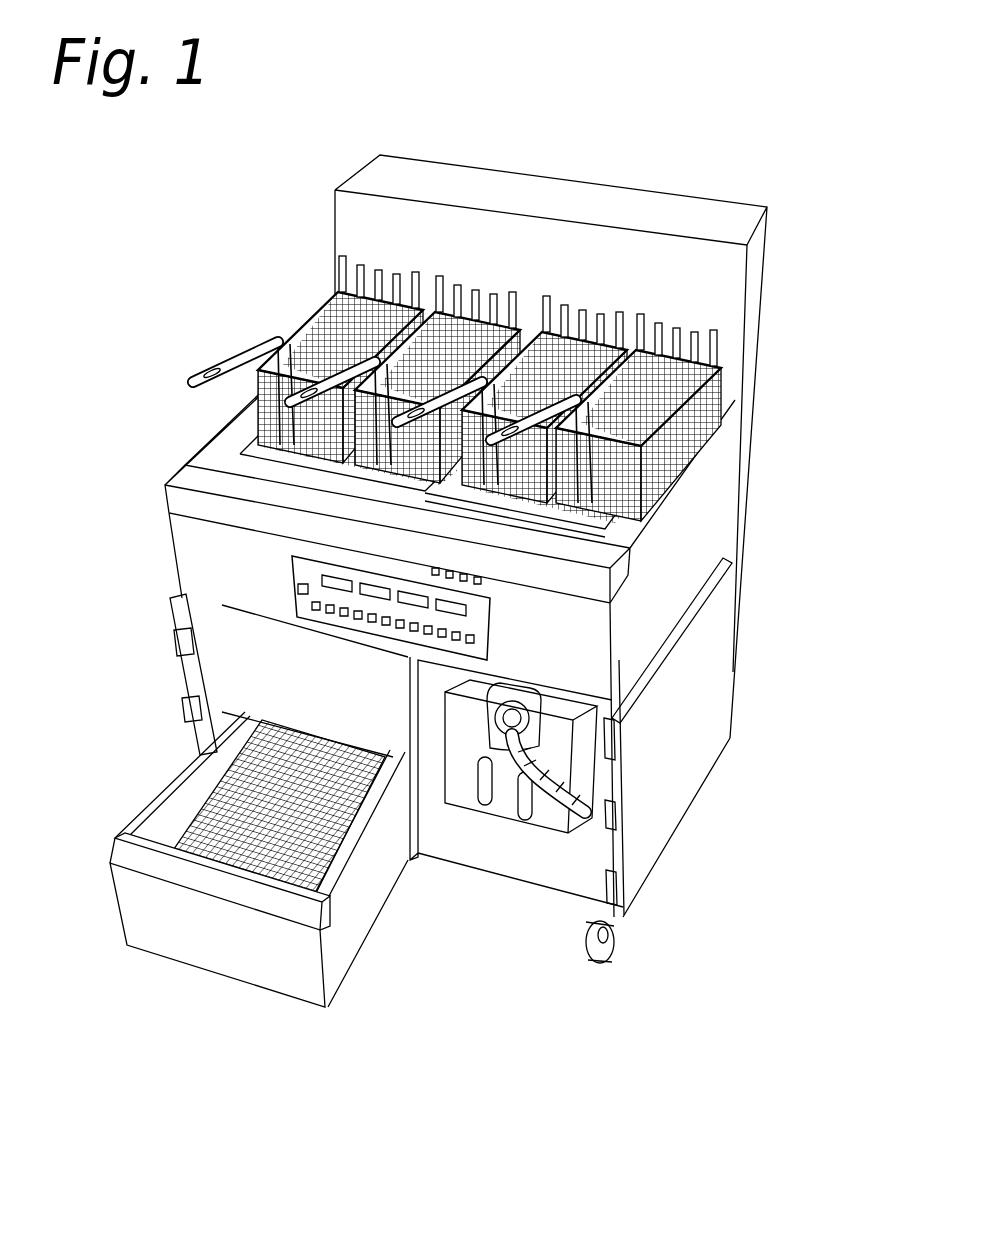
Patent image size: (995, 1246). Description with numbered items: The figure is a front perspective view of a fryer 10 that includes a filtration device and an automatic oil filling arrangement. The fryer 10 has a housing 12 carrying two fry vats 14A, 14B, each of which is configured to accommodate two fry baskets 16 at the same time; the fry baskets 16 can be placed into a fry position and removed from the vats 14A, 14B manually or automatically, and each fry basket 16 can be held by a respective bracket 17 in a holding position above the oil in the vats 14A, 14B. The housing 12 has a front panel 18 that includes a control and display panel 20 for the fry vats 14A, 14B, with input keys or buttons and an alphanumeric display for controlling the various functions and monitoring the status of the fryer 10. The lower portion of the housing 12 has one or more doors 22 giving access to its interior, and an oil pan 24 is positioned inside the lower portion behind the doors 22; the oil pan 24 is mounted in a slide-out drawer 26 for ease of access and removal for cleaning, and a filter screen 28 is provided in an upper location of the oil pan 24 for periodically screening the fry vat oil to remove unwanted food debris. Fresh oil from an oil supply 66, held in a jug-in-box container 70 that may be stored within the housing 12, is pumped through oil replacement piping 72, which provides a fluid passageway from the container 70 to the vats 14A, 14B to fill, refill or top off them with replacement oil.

The fryer 10 is at (246, 167).
The housing 12 is at (720, 500).
The fry vat 14A is at (227, 453).
The fry vat 14B is at (602, 528).
The fry basket 16 is at (233, 368).
The bracket 17 is at (471, 277).
The front panel 18 is at (200, 573).
The control and display panel 20 is at (293, 577).
The door 22 is at (700, 715).
The oil pan 24 is at (260, 885).
The slide-out drawer 26 is at (144, 832).
The filter screen 28 is at (323, 852).
The oil supply 66 is at (498, 848).
The jug-in-box container 70 is at (463, 770).
The oil replacement piping 72 is at (582, 820).